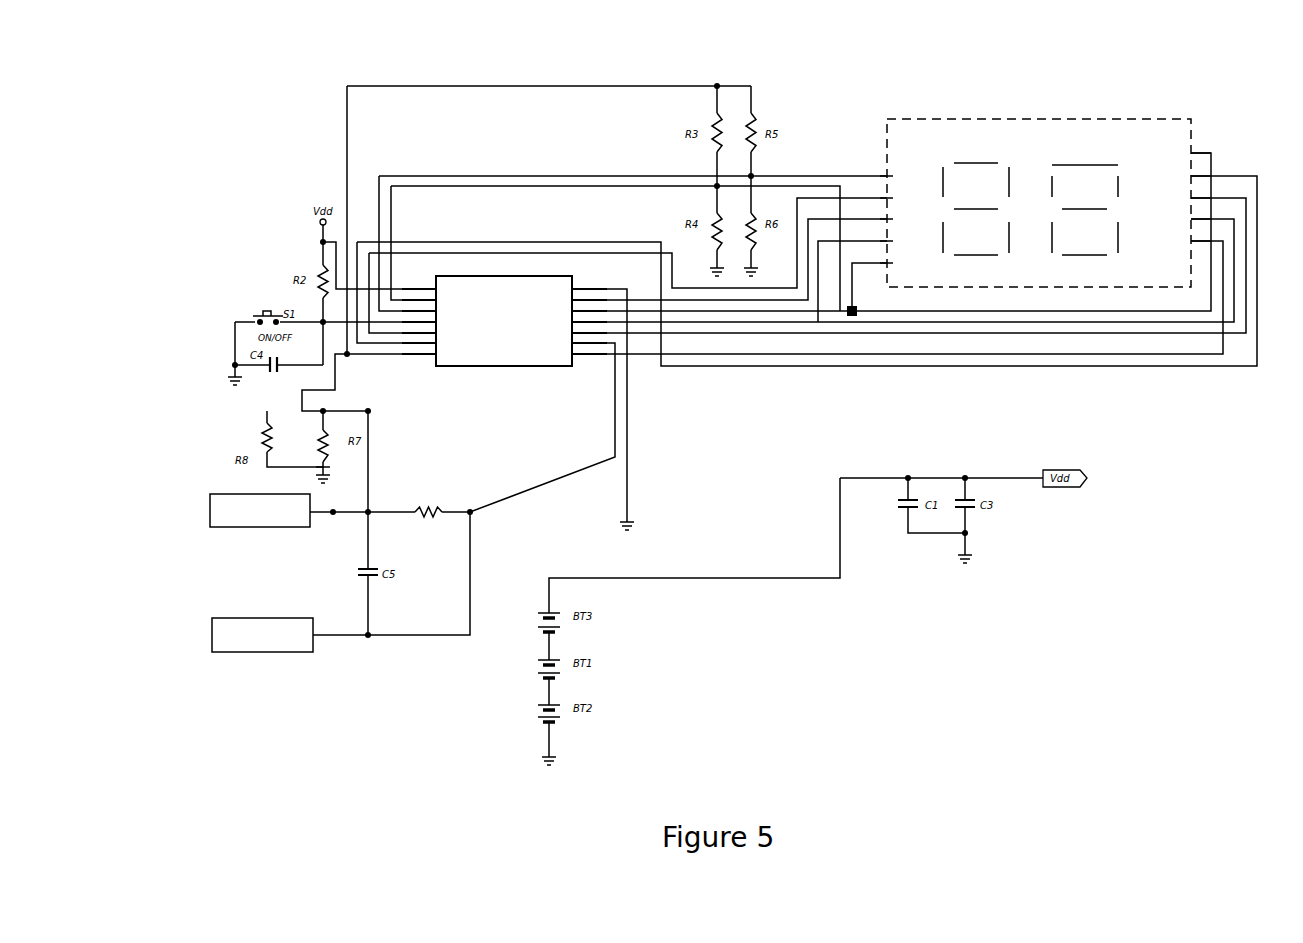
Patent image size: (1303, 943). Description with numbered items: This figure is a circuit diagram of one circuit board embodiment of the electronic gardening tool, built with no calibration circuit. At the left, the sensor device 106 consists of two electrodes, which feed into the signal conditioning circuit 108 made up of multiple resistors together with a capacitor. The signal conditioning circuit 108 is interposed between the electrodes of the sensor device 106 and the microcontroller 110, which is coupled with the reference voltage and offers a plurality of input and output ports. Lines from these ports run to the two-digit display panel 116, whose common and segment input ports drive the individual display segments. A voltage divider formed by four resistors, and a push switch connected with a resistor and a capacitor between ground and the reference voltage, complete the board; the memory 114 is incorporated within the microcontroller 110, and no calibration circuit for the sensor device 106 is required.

The sensor device 106 is at (202, 495).
The signal conditioning circuit 108 is at (422, 474).
The microcontroller 110 is at (525, 275).
The memory 114 is at (1025, 118).
The display panel 116 is at (632, 670).